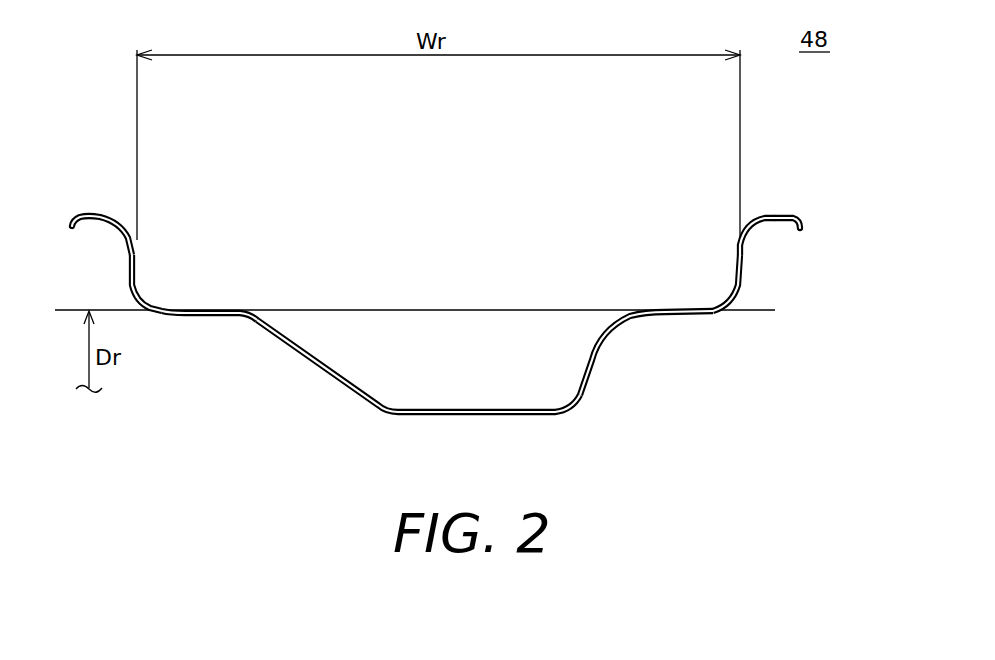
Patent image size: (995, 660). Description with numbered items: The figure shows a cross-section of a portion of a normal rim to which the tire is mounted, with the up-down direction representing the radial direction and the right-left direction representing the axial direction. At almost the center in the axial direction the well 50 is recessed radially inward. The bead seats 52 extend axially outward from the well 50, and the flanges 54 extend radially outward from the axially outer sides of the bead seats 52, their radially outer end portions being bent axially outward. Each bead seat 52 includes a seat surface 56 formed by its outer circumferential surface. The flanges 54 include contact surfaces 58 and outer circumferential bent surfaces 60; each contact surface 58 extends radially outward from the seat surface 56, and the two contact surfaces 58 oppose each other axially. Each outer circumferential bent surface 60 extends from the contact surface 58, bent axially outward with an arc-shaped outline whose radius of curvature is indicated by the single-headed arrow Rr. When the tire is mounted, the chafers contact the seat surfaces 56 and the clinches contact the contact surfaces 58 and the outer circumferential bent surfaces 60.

The well 50 is at (333, 380).
The bead seat 52 is at (203, 318).
The flange 54 is at (80, 213).
The seat surface 56 is at (224, 311).
The contact surface 58 is at (137, 272).
The outer circumferential bent surface 60 is at (108, 216).
The radius of curvature Rr is at (110, 226).